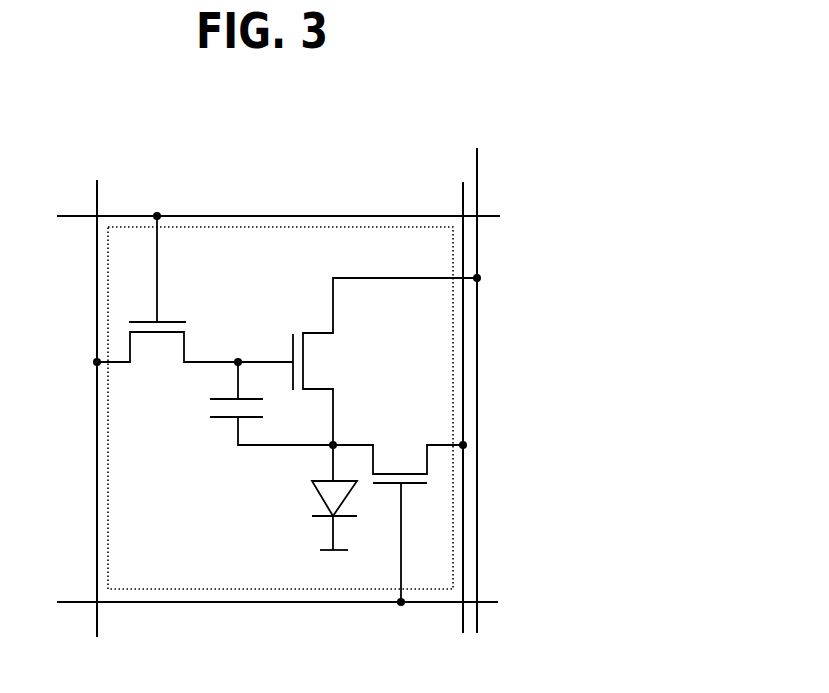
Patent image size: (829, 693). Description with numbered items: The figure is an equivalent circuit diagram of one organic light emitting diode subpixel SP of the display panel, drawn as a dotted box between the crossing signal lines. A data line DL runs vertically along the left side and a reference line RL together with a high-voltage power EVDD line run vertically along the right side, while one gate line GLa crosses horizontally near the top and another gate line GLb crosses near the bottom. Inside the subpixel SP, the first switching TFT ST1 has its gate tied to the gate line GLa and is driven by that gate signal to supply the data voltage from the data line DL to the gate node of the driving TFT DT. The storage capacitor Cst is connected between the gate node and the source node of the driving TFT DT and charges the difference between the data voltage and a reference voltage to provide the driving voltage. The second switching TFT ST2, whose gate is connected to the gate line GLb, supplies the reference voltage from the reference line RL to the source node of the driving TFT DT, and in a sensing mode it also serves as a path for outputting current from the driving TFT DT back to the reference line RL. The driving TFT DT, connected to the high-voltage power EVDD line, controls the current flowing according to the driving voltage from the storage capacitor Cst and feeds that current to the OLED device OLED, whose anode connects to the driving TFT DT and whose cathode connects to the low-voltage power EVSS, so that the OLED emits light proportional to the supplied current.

The data line DL is at (95, 398).
The gate line GLa is at (257, 216).
The gate line GLb is at (256, 602).
The high-voltage power line EVDD is at (477, 380).
The reference line RL is at (454, 397).
The subpixel SP is at (302, 227).
The first switching TFT ST1 is at (167, 296).
The storage capacitor Cst is at (251, 403).
The driving TFT DT is at (357, 363).
The second switching TFT ST2 is at (398, 523).
The OLED device OLED is at (305, 497).
The low-voltage power line EVSS is at (331, 566).